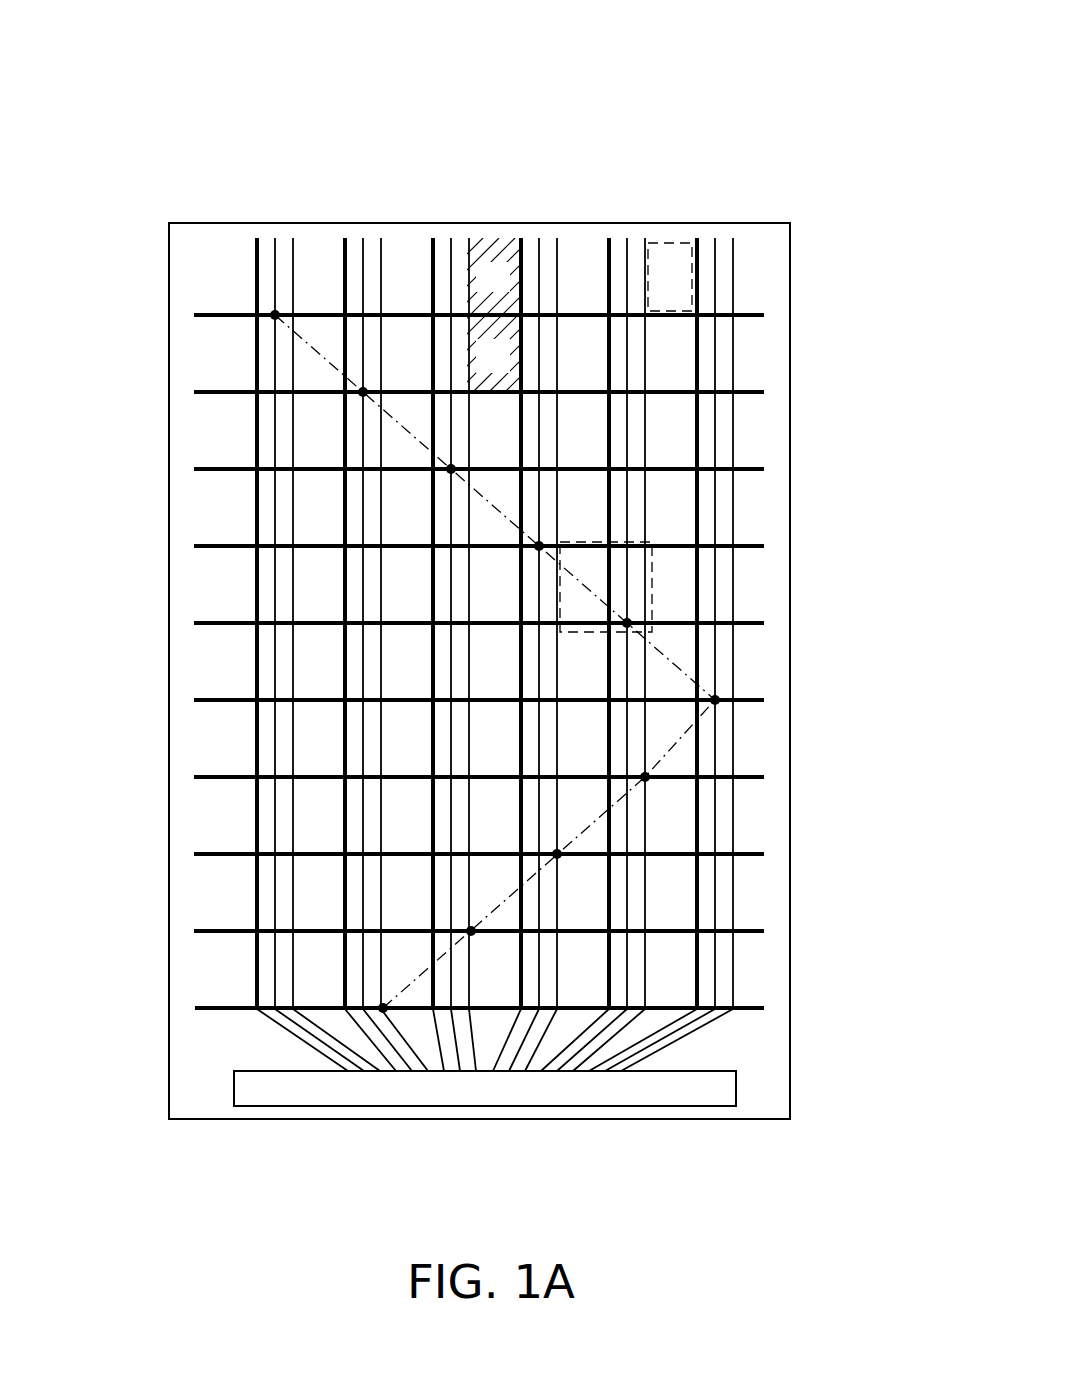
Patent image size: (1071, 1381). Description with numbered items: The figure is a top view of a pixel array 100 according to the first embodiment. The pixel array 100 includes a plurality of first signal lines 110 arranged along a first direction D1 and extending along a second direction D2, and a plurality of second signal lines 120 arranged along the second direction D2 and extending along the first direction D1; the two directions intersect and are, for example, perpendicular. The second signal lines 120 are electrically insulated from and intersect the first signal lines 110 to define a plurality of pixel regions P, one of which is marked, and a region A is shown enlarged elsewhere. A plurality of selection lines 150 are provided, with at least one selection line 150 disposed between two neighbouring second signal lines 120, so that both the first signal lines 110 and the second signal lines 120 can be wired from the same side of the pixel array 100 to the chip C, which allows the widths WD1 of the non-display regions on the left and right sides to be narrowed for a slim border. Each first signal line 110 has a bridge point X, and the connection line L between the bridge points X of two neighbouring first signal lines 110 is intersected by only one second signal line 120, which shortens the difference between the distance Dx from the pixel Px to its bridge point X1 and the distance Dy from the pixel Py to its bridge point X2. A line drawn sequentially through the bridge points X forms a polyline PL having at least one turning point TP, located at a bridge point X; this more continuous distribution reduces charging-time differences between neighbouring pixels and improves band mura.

The pixel array 100 is at (780, 185).
The first signal lines 110 is at (480, 638).
The second signal lines 120 is at (609, 238).
The selection lines 150 is at (645, 238).
The pixel regions P is at (679, 243).
The region A is at (653, 587).
The turning point TP is at (717, 700).
The polyline PL is at (677, 744).
The bridge point X is at (648, 779).
The bridge point X1 is at (275, 314).
The bridge point X2 is at (363, 392).
The connection line L is at (383, 1008).
The chip C is at (543, 1093).
The widths of the non-display regions WD1 is at (195, 1009).
The distance Dx is at (521, 168).
The distance Dy is at (521, 210).
The pixel Px is at (493, 315).
The pixel Py is at (493, 355).
The first direction D1 is at (73, 31).
The second direction D2 is at (73, 31).